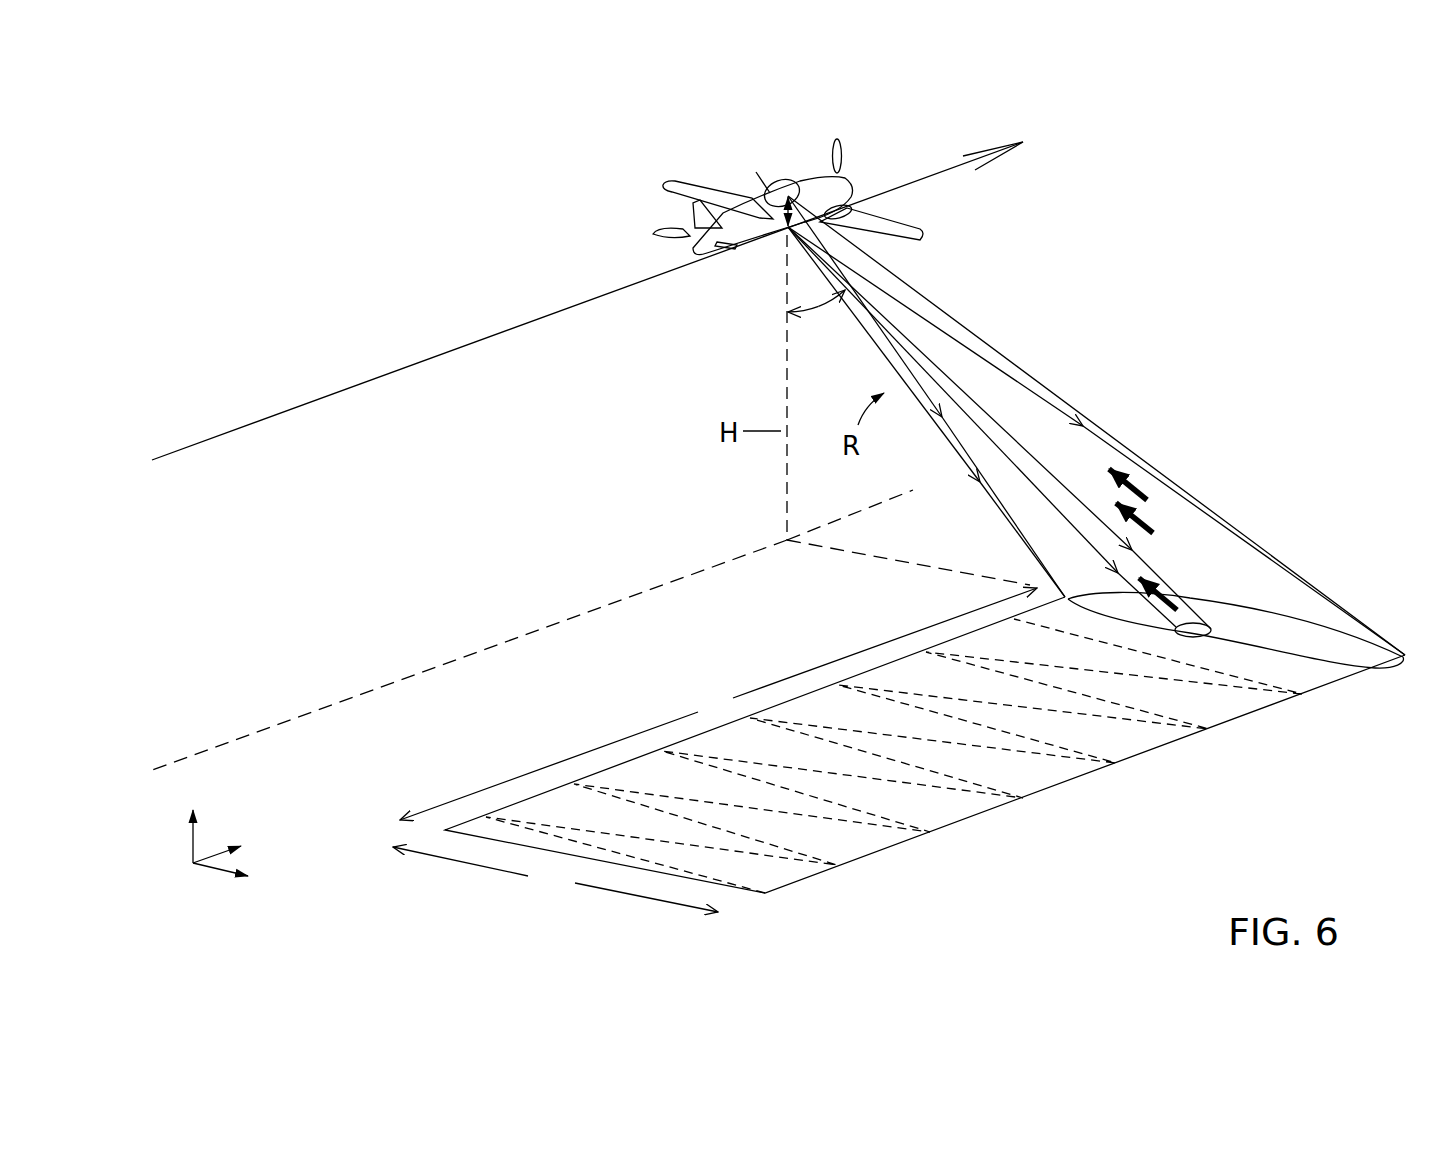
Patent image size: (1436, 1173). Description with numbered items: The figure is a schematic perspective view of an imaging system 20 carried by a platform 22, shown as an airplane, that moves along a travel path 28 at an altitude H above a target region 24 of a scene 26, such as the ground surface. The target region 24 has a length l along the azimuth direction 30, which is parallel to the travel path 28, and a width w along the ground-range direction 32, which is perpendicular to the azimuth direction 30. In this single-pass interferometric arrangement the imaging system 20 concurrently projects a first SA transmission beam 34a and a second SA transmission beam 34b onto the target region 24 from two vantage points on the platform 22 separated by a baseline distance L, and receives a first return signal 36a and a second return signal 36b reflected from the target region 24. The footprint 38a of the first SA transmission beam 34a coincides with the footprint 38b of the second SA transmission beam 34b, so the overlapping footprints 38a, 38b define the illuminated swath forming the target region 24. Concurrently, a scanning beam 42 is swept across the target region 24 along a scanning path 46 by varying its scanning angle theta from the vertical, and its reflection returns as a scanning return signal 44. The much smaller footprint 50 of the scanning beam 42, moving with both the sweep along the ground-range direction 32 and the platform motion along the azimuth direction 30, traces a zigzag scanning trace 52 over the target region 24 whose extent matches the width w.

The imaging system 20 is at (778, 148).
The platform 22 is at (900, 237).
The target region 24 is at (952, 816).
The scene 26 is at (478, 902).
The travel path 28 is at (468, 346).
The azimuth direction 30 is at (218, 850).
The ground-range direction 32 is at (216, 870).
The first SA transmission beam 34a is at (1110, 447).
The second SA transmission beam 34b is at (948, 312).
The first return signal 36a is at (1137, 486).
The second return signal 36b is at (1147, 520).
The footprint of the first SA transmission beam 38a is at (1348, 654).
The footprint of the second SA transmission beam 38b is at (1311, 650).
The scanning beam 42 is at (1007, 433).
The scanning return signal 44 is at (1160, 587).
The scanning path 46 is at (813, 300).
The footprint of the scanning beam 50 is at (1214, 629).
The scanning trace 52 is at (955, 778).